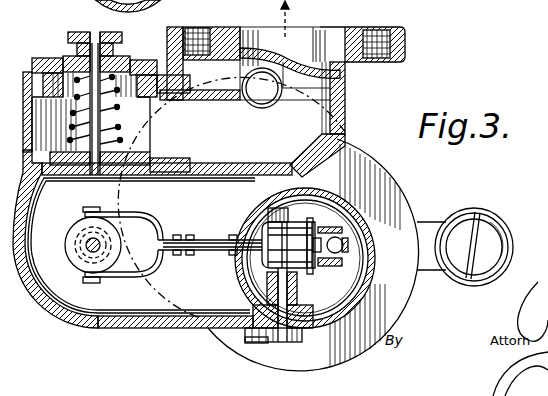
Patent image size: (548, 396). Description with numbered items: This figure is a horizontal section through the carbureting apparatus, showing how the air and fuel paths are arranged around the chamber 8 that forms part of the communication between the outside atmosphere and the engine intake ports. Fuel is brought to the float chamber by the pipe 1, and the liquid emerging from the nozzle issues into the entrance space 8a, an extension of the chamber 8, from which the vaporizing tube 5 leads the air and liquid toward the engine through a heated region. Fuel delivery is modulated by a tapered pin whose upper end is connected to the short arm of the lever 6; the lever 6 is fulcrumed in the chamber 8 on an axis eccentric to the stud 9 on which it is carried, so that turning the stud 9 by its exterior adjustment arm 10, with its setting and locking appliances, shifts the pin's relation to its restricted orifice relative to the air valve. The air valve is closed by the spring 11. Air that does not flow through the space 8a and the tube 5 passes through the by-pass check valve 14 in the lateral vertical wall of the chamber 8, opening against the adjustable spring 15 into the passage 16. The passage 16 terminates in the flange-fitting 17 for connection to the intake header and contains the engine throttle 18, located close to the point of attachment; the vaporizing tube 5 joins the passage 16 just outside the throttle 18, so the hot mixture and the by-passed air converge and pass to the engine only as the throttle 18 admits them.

The pipe 1 is at (500, 222).
The vaporizing tube 5 is at (244, 84).
The lever 6 is at (345, 252).
The chamber 8 is at (173, 302).
The entrance space 8a is at (330, 222).
The stud 9 is at (318, 325).
The adjustment arm 10 is at (263, 343).
The spring 11 is at (83, 257).
The by-pass check valve 14 is at (147, 155).
The adjustable spring 15 is at (120, 122).
The passage 16 is at (231, 197).
The flange-fitting 17 is at (405, 48).
The engine throttle 18 is at (333, 90).